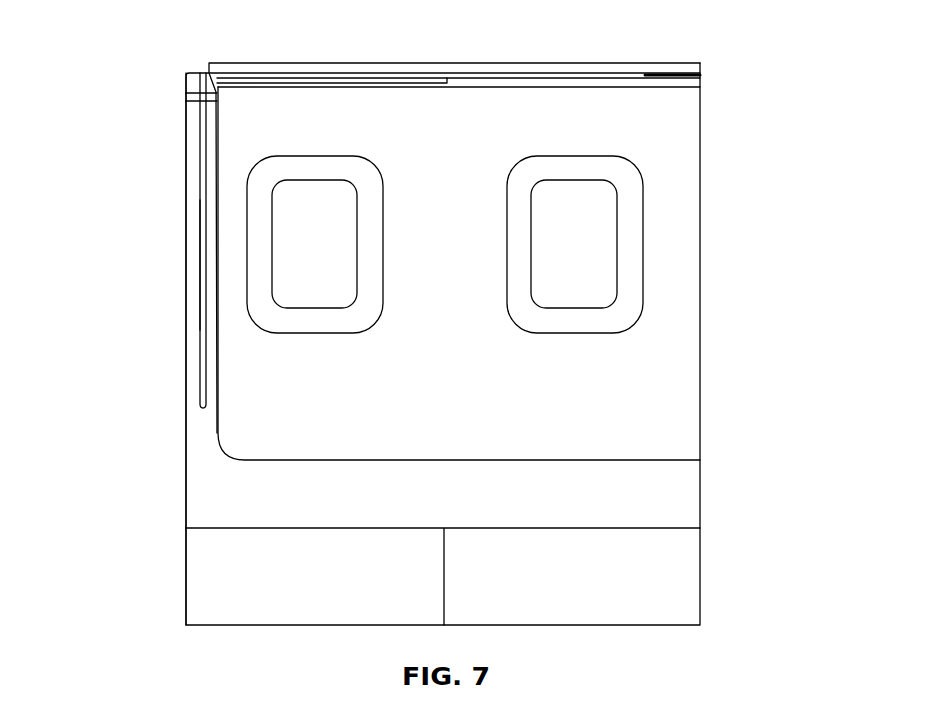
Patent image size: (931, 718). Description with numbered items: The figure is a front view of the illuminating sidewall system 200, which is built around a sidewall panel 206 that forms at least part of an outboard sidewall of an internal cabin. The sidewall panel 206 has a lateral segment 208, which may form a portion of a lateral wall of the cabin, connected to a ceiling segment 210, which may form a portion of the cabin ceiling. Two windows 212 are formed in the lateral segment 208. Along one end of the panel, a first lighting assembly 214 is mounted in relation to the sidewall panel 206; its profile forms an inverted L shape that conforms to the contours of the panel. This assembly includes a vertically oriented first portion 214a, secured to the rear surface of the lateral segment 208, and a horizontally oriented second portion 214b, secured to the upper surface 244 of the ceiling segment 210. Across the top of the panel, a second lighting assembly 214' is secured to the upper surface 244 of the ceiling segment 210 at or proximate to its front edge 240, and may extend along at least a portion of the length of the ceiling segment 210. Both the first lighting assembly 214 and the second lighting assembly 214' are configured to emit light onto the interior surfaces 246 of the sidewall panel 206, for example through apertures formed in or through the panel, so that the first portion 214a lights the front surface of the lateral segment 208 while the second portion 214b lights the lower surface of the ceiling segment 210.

The illuminating sidewall system 200 is at (163, 60).
The sidewall panel 206 is at (678, 410).
The lateral segment 208 is at (212, 483).
The ceiling segment 210 is at (672, 80).
The window 212 is at (563, 251).
The first lighting assembly 214 is at (159, 349).
The first portion of the lighting assemblies 214a is at (202, 260).
The second portion of the lighting assemblies 214b is at (197, 90).
The second lighting assembly 214' is at (454, 44).
The front edge 240 is at (545, 78).
The upper surface 244 is at (702, 75).
The interior surfaces 246 is at (363, 83).